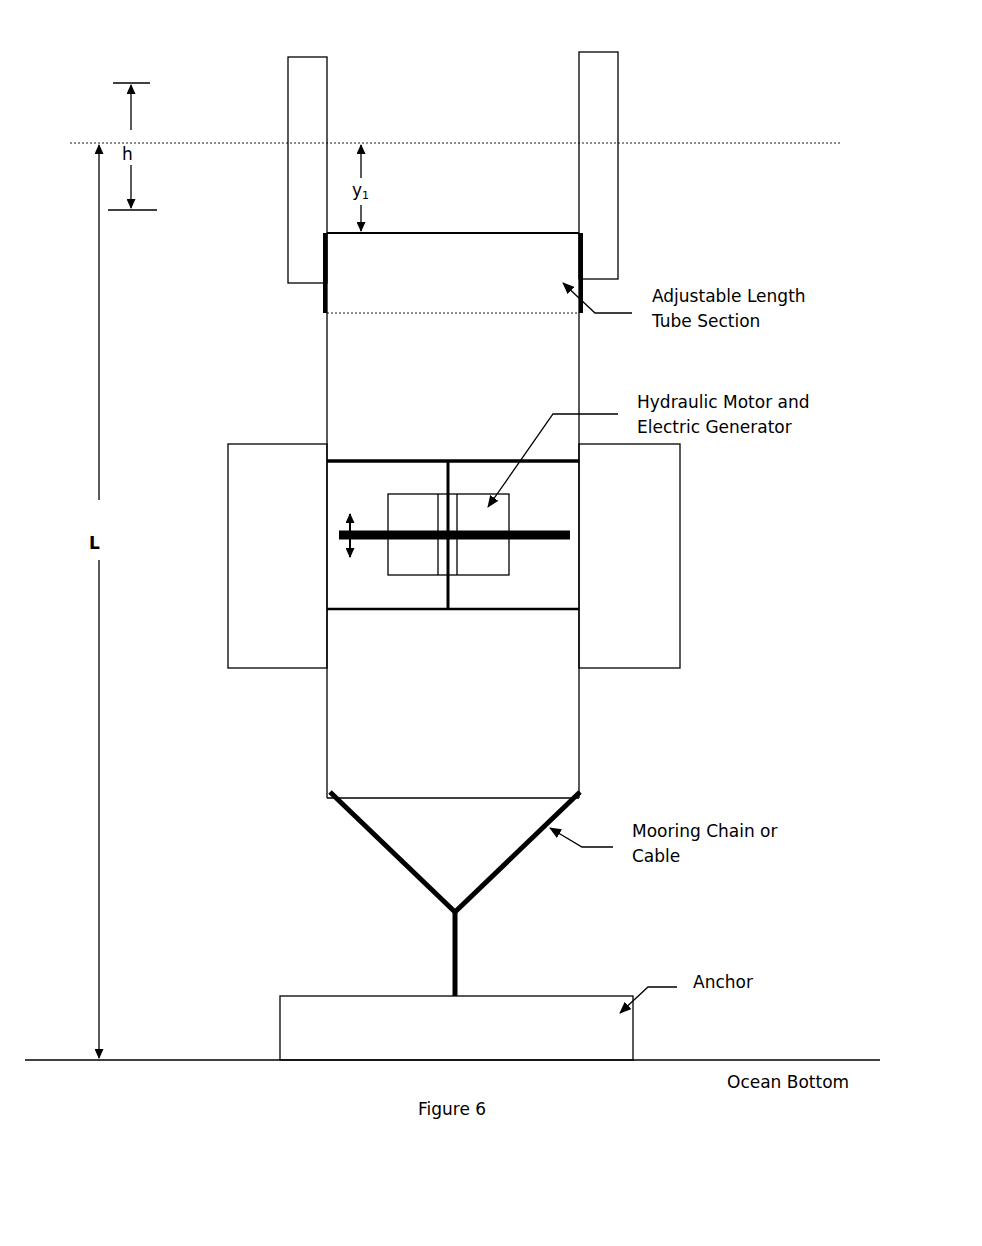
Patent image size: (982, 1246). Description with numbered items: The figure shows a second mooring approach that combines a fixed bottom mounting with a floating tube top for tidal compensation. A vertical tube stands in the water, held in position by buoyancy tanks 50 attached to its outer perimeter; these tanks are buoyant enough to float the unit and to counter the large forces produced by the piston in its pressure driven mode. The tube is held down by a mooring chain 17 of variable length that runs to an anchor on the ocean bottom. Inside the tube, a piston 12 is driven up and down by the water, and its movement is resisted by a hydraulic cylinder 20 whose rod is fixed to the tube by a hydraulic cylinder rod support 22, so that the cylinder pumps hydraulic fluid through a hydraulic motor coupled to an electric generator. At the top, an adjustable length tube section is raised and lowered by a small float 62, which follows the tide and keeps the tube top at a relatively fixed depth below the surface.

The float 62 is at (595, 92).
The hydraulic cylinder rod support 22 is at (393, 458).
The hydraulic cylinder 20 is at (438, 528).
The piston 12 is at (566, 527).
The buoyancy tanks 50 is at (282, 630).
The mooring chain 17 is at (438, 957).